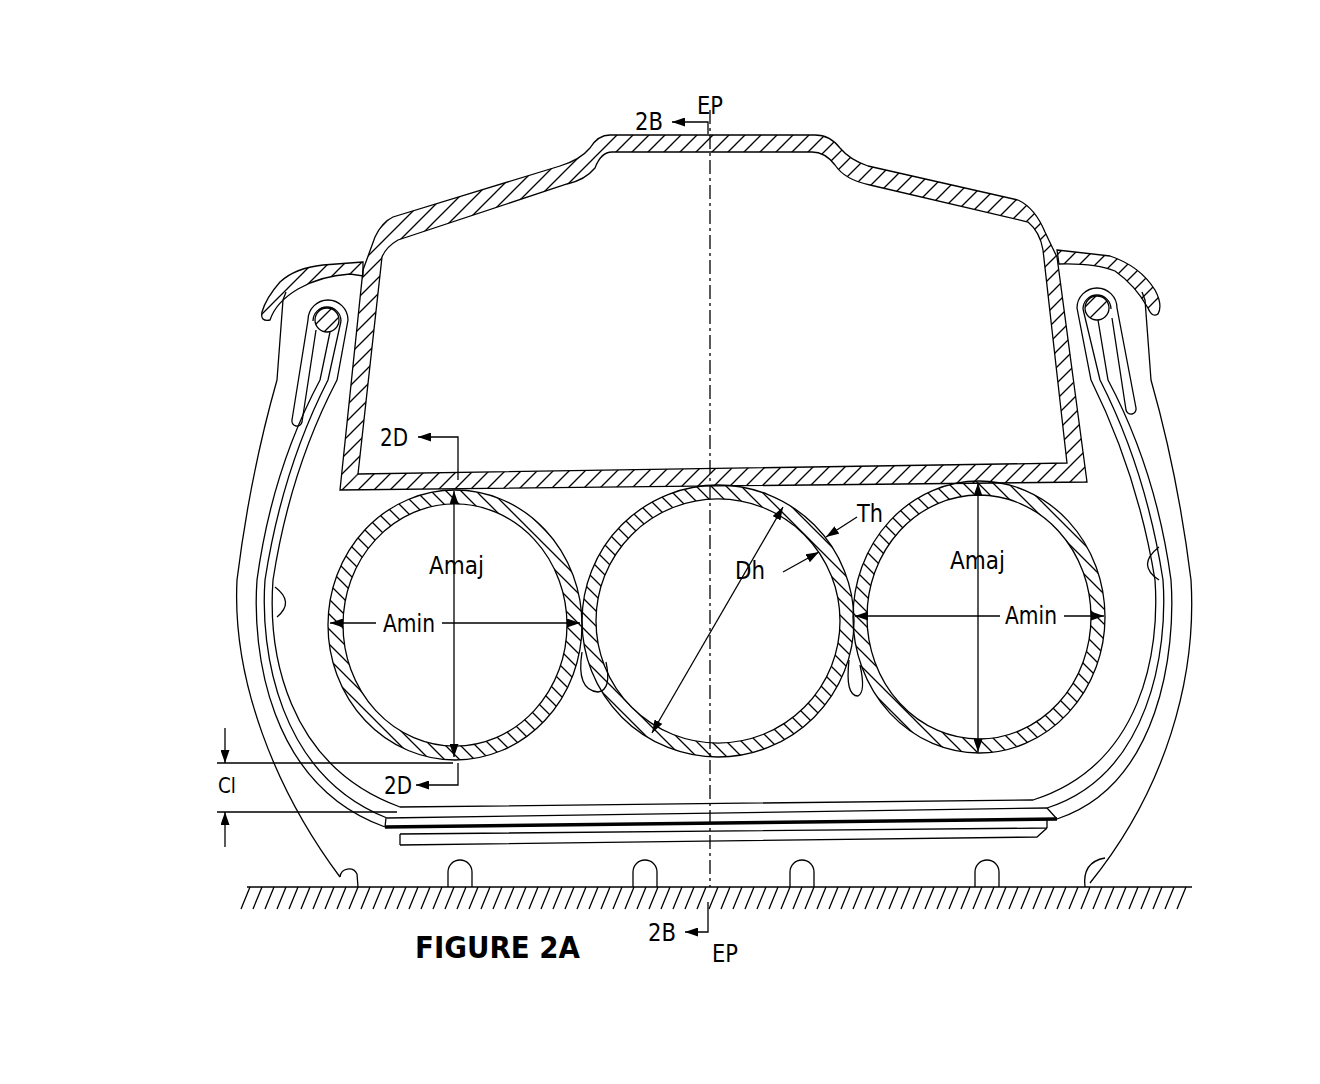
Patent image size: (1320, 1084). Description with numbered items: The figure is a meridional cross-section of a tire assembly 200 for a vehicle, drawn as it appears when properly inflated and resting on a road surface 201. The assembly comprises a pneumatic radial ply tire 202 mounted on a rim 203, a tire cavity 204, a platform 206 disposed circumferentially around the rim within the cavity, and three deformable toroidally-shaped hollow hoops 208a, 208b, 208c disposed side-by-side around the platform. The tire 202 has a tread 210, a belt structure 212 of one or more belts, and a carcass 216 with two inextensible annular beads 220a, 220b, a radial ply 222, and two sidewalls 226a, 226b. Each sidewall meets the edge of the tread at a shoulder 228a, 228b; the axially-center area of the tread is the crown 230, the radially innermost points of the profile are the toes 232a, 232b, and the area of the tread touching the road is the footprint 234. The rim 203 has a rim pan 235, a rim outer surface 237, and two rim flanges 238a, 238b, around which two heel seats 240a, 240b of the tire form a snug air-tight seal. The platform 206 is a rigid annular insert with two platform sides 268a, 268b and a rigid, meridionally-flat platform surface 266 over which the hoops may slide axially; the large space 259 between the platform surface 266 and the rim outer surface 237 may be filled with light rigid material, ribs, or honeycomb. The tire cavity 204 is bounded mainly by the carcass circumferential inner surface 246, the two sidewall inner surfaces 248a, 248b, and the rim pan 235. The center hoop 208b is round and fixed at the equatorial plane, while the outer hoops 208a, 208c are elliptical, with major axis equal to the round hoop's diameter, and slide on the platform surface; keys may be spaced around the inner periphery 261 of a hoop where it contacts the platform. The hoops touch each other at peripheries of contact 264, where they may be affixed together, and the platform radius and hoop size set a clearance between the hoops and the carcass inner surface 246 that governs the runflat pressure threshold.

The tire assembly 200 is at (1122, 146).
The road surface 201 is at (1165, 883).
The pneumatic radial ply tire 202 is at (1193, 400).
The rim 203 is at (1017, 166).
The tire cavity 204 is at (1107, 497).
The platform 206 is at (1098, 450).
The outer hoop 208a is at (488, 752).
The center hoop 208b is at (748, 757).
The outer hoop 208c is at (1020, 740).
The tread 210 is at (843, 887).
The belt structure 212 is at (882, 830).
The carcass 216 is at (520, 805).
The bead 220a is at (314, 323).
The bead 220b is at (1109, 304).
The radial ply 222 is at (266, 535).
The sidewall 226a is at (243, 672).
The sidewall 226b is at (1193, 624).
The shoulder 228a is at (342, 878).
The shoulder 228b is at (1098, 870).
The crown 230 is at (720, 820).
The toe 232a is at (358, 262).
The toe 232b is at (1067, 268).
The footprint 234 is at (933, 887).
The rim pan 235 is at (813, 160).
The rim outer surface 237 is at (842, 137).
The rim flange 238a is at (268, 330).
The rim flange 238b is at (1155, 313).
The heel seat 240a is at (318, 264).
The heel seat 240b is at (1107, 260).
The carcass circumferential inner surface 246 is at (655, 808).
The sidewall inner surface 248a is at (283, 600).
The sidewall inner surface 248b is at (1160, 548).
The large space 259 is at (922, 222).
The inner periphery 261 is at (463, 483).
The periphery of contact 264 is at (598, 690).
The platform surface 266 is at (553, 494).
The platform side 268a is at (345, 462).
The platform side 268b is at (1127, 432).